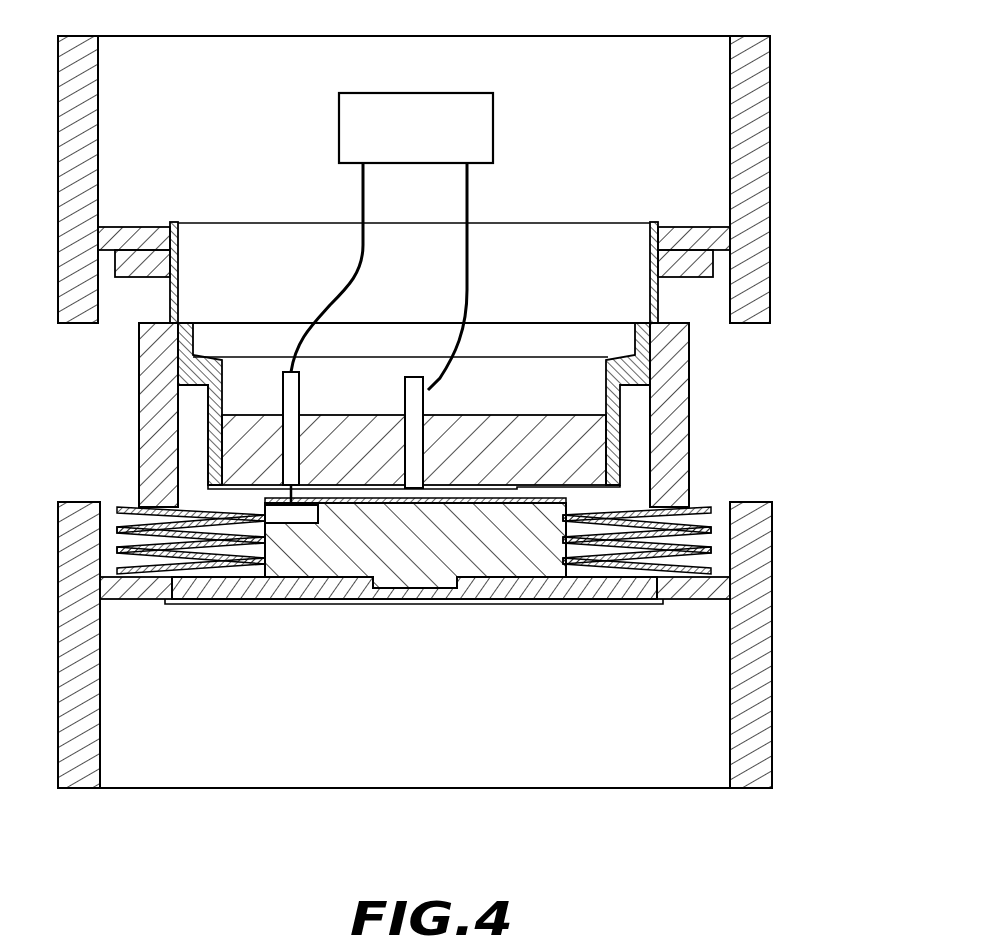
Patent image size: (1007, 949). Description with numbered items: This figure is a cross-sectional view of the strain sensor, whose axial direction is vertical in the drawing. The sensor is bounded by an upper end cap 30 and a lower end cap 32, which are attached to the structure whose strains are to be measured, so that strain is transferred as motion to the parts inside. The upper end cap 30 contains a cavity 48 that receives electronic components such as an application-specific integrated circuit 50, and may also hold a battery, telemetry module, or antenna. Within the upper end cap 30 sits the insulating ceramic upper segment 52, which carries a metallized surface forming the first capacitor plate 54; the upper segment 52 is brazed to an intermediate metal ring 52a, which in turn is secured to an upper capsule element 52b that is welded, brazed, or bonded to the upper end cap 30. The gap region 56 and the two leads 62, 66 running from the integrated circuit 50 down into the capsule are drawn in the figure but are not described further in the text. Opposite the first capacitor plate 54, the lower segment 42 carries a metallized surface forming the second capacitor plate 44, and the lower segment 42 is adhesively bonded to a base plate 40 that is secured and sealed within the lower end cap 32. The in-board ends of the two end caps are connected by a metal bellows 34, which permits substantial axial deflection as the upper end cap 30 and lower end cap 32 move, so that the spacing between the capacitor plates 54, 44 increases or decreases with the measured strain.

The upper end cap 30 is at (757, 100).
The cavity 48 is at (705, 146).
The application-specific integrated circuit (ASIC) 50 is at (493, 110).
The upper segment 52 is at (420, 415).
The intermediate metal ring 52a is at (195, 369).
The upper capsule element 52b is at (160, 415).
The gap channel 56 is at (193, 451).
The first capacitor plate 54 is at (462, 488).
The first probe pin 62 is at (283, 398).
The second probe pin 66 is at (413, 405).
The second capacitor plate 44 is at (547, 493).
The lower segment 42 is at (402, 567).
The base plate 40 is at (507, 587).
The metal bellows 34 is at (713, 530).
The lower end cap 32 is at (755, 671).